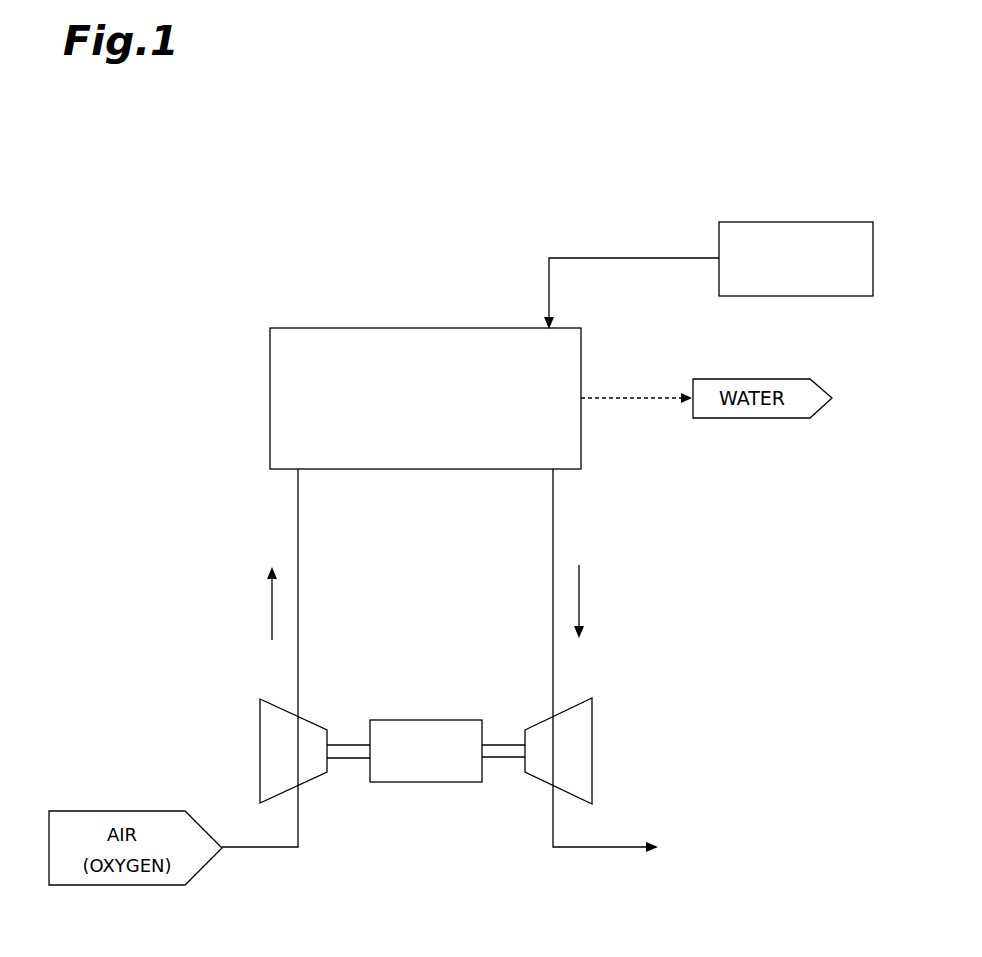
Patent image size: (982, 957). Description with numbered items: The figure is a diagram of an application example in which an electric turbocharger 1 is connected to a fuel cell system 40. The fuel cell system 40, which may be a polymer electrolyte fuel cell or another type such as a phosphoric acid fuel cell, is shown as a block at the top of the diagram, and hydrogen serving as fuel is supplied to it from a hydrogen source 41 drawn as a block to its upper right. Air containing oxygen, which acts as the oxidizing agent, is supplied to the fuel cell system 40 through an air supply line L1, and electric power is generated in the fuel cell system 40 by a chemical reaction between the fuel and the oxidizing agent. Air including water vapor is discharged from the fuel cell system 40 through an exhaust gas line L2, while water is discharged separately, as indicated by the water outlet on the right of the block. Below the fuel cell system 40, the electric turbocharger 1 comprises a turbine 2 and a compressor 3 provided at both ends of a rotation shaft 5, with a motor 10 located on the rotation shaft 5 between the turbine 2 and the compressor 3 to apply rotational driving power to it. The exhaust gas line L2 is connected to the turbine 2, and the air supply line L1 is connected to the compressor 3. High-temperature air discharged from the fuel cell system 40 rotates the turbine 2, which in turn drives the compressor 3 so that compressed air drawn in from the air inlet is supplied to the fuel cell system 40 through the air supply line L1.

The electric turbocharger 1 is at (680, 672).
The turbine 2 is at (592, 746).
The compressor 3 is at (260, 746).
The rotation shaft 5 is at (502, 760).
The motor 10 is at (423, 782).
The fuel cell system 40 is at (321, 328).
The hydrogen source 41 is at (846, 222).
The air supply line L1 is at (298, 670).
The exhaust gas line L2 is at (553, 668).